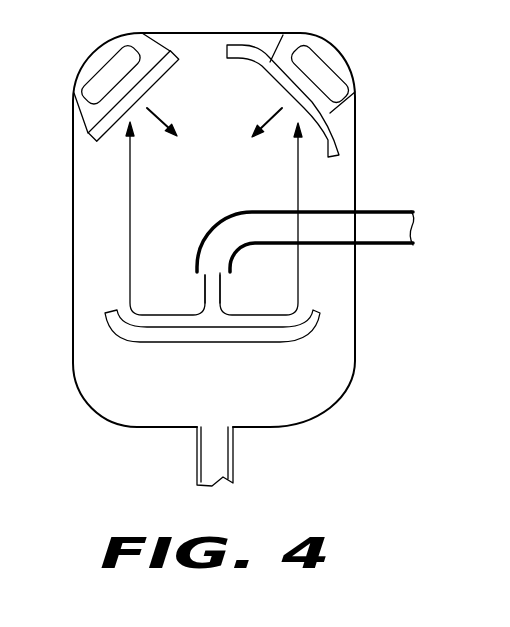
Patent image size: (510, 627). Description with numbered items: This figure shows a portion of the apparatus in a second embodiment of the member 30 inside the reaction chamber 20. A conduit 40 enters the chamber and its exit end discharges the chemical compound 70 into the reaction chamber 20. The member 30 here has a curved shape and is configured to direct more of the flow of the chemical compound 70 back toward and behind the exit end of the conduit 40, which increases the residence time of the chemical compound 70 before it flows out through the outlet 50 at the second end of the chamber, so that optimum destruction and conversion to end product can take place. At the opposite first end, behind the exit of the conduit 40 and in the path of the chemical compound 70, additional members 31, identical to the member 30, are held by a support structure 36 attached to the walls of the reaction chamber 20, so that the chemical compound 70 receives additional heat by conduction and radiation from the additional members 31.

The reaction chamber 20 is at (336, 57).
The member 30 is at (200, 343).
The additional members 31 is at (244, 70).
The support structure 36 is at (80, 110).
The conduit 40 is at (387, 245).
The outlet 50 is at (197, 447).
The chemical compound 70 is at (228, 283).